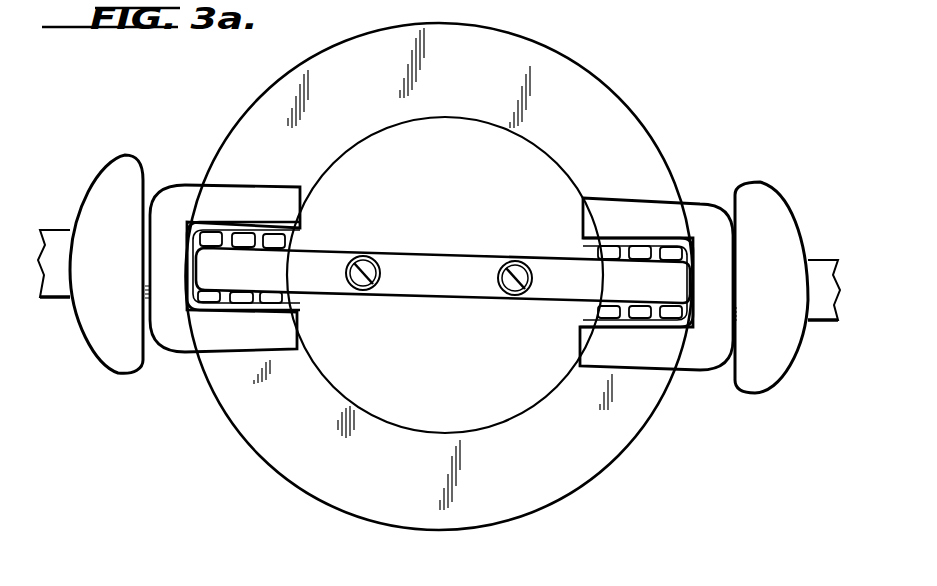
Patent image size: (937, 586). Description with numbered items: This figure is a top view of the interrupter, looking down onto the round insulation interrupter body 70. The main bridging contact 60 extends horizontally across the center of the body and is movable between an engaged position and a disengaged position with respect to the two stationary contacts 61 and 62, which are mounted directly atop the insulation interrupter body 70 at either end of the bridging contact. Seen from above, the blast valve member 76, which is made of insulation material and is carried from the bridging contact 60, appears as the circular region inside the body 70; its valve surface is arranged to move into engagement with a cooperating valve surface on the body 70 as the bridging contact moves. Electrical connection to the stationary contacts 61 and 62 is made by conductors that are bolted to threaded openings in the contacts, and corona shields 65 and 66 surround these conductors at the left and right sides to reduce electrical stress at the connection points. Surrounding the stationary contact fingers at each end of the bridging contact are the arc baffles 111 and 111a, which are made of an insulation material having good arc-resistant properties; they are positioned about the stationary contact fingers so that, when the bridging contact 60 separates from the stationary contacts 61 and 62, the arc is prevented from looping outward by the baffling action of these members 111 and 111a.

The main bridging contact 60 is at (405, 290).
The stationary contact 61 is at (612, 254).
The stationary contact 62 is at (286, 243).
The corona shield 65 is at (110, 181).
The corona shield 66 is at (790, 218).
The insulation interrupter body 70 is at (641, 427).
The blast valve member 76 is at (502, 403).
The arc baffle 111 is at (197, 174).
The arc baffle 111a is at (688, 217).